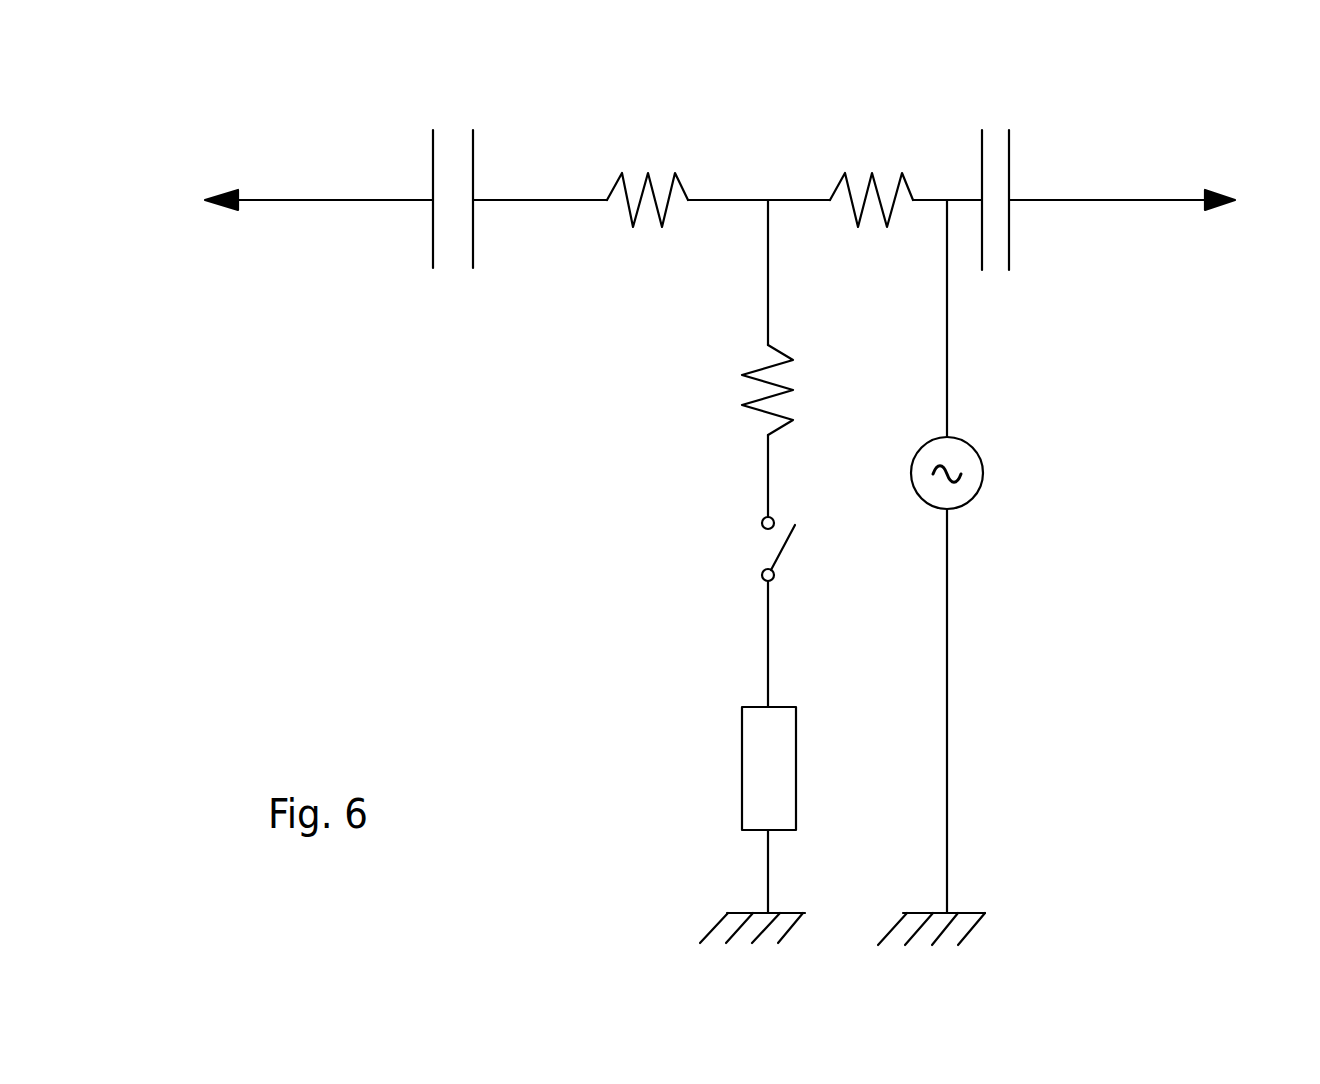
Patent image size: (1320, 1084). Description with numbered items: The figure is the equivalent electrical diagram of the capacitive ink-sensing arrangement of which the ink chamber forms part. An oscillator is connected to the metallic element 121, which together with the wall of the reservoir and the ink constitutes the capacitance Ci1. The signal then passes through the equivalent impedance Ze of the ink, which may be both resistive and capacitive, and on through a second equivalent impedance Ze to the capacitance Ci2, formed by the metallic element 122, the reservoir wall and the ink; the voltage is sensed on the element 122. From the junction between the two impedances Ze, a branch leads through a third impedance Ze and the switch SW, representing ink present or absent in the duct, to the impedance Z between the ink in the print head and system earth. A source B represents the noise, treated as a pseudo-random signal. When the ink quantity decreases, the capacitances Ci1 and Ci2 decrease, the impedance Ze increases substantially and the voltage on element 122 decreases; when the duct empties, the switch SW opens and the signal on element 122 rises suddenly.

The metallic element 121 is at (295, 200).
The metallic element 122 is at (1149, 200).
The capacitance Ci1 is at (520, 178).
The capacitance Ci2 is at (992, 179).
The equivalent impedance of the ink Ze is at (794, 321).
The switch SW is at (798, 612).
The impedance Z is at (763, 825).
The noise B is at (942, 572).